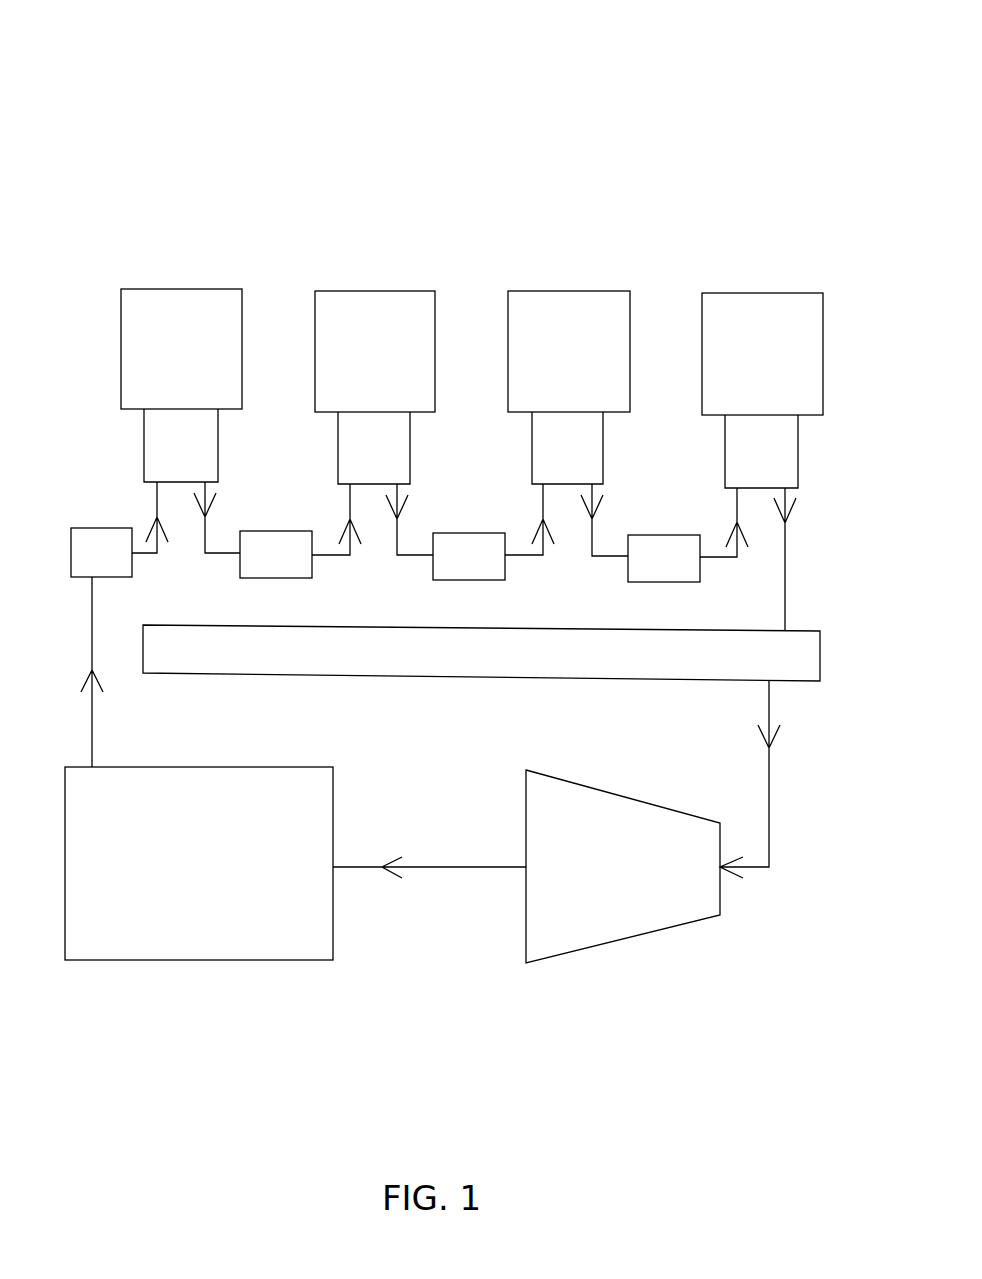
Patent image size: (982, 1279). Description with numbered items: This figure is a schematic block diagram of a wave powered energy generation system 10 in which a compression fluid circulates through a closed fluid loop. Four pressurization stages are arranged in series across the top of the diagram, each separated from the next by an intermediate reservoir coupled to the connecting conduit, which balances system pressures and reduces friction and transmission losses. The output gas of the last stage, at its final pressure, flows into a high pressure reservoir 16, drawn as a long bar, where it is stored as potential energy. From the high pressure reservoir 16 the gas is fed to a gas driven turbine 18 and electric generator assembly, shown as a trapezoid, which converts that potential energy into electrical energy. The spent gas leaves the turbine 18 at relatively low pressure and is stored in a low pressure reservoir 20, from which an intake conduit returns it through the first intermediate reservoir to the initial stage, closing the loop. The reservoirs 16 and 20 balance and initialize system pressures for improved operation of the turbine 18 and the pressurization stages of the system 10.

The system 10 is at (236, 62).
The high pressure reservoir 16 is at (623, 676).
The turbine 18 is at (620, 788).
The low pressure reservoir 20 is at (233, 767).